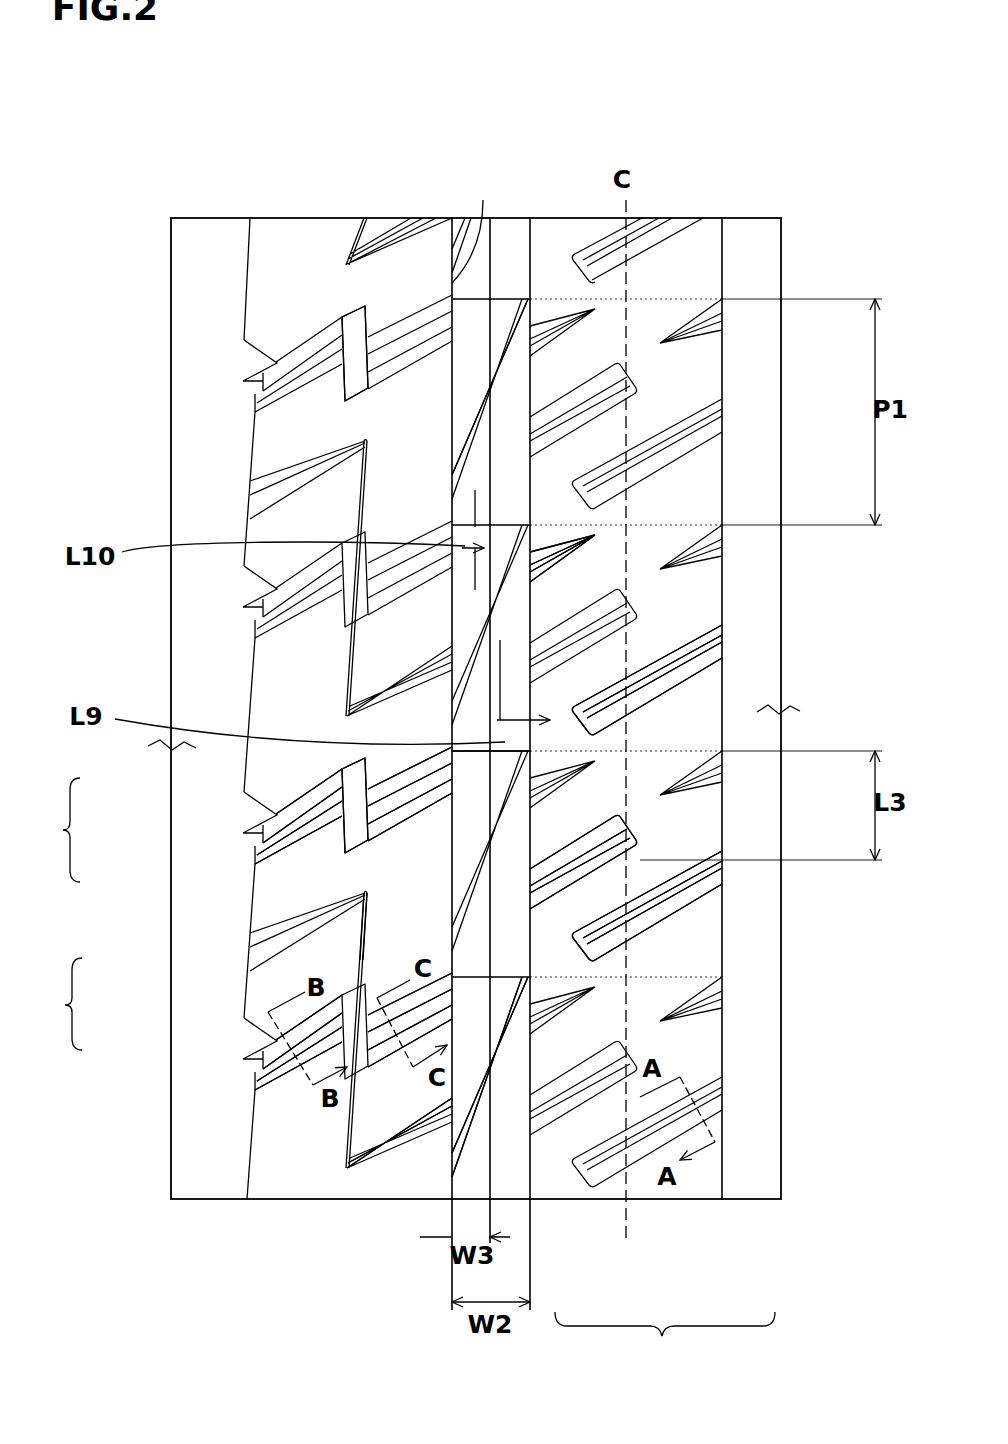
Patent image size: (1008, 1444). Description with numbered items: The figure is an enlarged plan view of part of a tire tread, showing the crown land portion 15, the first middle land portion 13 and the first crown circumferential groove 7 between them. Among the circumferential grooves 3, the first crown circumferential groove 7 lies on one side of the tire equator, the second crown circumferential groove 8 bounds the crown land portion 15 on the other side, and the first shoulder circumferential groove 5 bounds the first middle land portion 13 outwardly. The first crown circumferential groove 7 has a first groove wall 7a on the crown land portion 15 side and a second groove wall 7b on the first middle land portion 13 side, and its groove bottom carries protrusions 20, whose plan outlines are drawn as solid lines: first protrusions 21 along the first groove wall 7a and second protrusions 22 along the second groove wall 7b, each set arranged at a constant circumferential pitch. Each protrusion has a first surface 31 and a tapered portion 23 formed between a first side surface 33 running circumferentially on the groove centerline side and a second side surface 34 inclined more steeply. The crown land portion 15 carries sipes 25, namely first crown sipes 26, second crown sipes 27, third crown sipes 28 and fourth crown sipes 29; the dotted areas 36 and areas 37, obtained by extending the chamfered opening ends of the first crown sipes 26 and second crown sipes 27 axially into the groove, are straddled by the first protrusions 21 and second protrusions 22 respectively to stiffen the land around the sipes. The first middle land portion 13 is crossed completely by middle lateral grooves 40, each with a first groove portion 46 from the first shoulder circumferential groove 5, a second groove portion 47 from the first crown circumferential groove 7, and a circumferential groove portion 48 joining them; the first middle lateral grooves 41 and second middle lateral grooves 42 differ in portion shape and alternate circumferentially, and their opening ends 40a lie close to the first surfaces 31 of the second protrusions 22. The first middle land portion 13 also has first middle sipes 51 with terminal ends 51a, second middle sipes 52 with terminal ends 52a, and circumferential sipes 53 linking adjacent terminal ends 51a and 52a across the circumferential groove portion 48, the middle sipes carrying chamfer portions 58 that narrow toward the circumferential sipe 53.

The circumferential grooves 3 is at (492, 590).
The first shoulder circumferential groove 5 is at (205, 275).
The first crown circumferential groove 7 is at (503, 243).
The first groove wall 7a is at (517, 250).
The second groove wall 7b is at (470, 242).
The second crown circumferential groove 8 is at (750, 243).
The first middle land portion 13 is at (335, 243).
The crown land portion 15 is at (673, 260).
The protrusions 20 is at (498, 330).
The first protrusions 21 is at (477, 1182).
The second protrusions 22 is at (502, 1022).
The tapered portion 23 is at (498, 364).
The sipes 25 is at (665, 1339).
The first crown sipes 26 is at (547, 790).
The second crown sipes 27 is at (610, 918).
The third crown sipes 28 is at (703, 1003).
The fourth crown sipes 29 is at (640, 1140).
The first surface 31 is at (507, 748).
The first side surface 33 is at (557, 703).
The second side surface 34 is at (542, 562).
The areas 36 is at (622, 843).
The areas 37 is at (580, 938).
The middle lateral grooves 40 is at (310, 358).
The opening ends 40a is at (485, 590).
The first middle lateral grooves 41 is at (52, 1004).
The second middle lateral grooves 42 is at (49, 830).
The first groove portion 46 is at (302, 815).
The second groove portion 47 is at (403, 797).
The circumferential groove portion 48 is at (352, 372).
The first middle sipes 51 is at (272, 487).
The terminal ends 51a is at (371, 887).
The second middle sipes 52 is at (390, 1148).
The terminal ends 52a is at (347, 1170).
The circumferential sipes 53 is at (347, 670).
The chamfer portions 58 is at (262, 482).